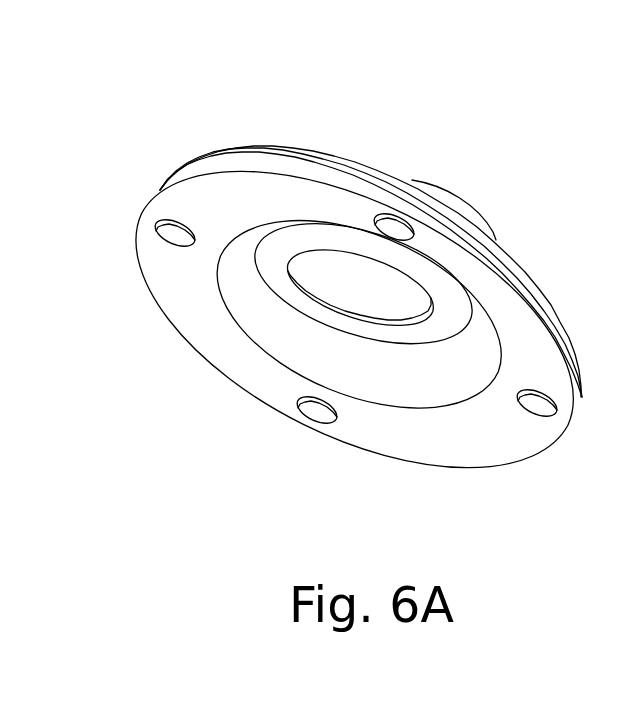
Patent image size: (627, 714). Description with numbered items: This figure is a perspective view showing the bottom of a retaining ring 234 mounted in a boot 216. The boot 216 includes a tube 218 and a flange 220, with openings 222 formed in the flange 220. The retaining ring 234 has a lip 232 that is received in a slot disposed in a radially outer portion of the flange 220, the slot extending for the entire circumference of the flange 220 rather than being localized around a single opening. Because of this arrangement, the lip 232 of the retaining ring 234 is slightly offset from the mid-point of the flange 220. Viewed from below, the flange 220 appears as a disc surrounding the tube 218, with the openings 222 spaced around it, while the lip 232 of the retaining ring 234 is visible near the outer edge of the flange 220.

The boot 216 is at (467, 193).
The tube 218 is at (421, 179).
The flange 220 is at (536, 276).
The openings 222 is at (178, 224).
The lip 232 is at (553, 307).
The retaining ring 234 is at (279, 147).